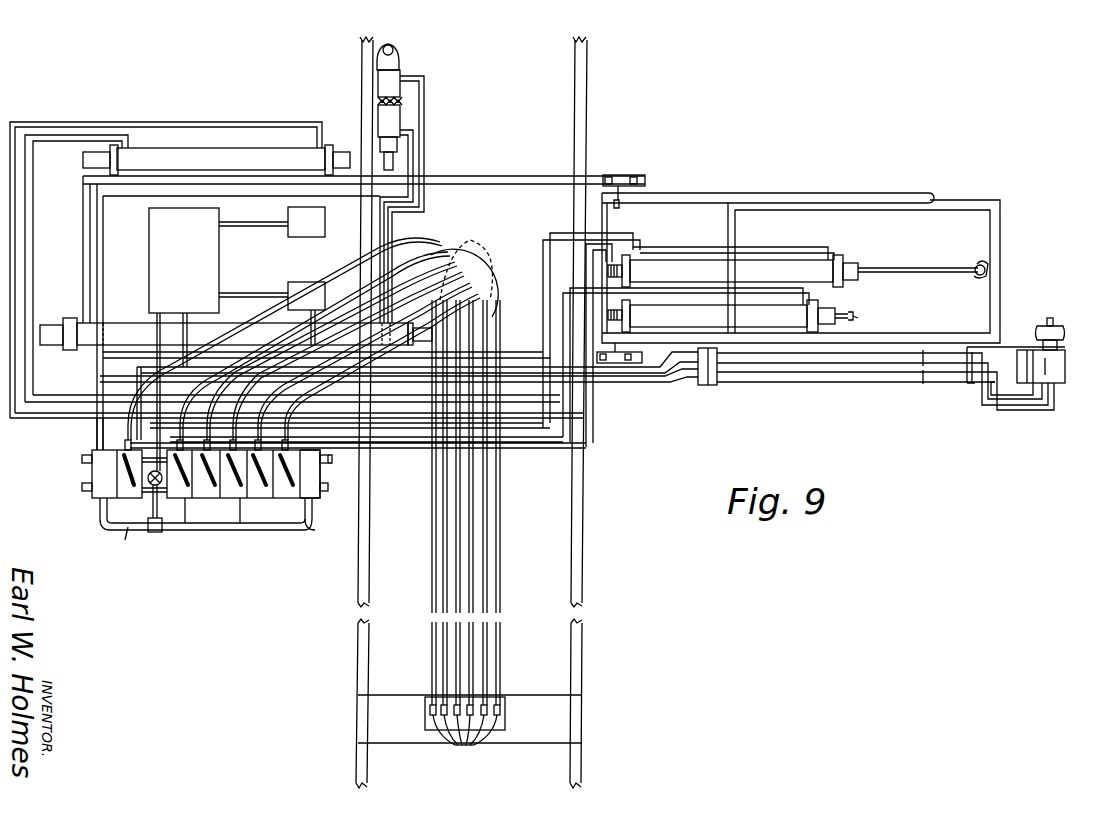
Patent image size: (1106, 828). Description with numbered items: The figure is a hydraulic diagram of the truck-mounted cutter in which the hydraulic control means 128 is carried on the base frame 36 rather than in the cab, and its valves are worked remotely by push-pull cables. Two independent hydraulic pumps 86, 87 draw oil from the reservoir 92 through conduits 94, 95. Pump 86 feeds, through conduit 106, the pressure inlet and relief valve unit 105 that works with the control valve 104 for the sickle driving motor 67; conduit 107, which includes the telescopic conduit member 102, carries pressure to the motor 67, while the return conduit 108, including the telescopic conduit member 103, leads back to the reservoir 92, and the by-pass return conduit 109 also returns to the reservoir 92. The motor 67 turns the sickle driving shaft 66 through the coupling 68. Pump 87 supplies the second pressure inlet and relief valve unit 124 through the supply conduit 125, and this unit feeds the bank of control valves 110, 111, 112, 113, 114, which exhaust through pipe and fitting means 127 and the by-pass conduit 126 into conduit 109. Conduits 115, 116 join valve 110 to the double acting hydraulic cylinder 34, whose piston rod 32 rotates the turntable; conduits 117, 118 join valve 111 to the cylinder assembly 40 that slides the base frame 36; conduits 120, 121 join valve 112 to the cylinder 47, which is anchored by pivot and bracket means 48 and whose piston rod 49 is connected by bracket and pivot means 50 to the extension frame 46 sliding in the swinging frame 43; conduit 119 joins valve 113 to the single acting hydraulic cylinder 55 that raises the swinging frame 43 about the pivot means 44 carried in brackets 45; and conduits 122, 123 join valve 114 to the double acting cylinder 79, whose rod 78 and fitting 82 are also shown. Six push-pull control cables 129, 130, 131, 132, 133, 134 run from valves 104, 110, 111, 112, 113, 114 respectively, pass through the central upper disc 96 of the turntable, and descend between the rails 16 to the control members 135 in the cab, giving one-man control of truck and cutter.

The mast rails 16 is at (580, 90).
The piston rod 32 is at (395, 160).
The hydraulic cylinder 34 is at (392, 107).
The base frame 36 is at (551, 181).
The hydraulic cylinder assembly 40 is at (207, 160).
The swinging frame 43 is at (895, 190).
The horizontal pivot means 44 is at (645, 184).
The brackets 45 is at (612, 175).
The extension frame 46 is at (965, 202).
The cylinder 47 is at (772, 258).
The pivot and bracket means 48 is at (622, 272).
The piston rod 49 is at (902, 270).
The bracket and pivot means 50 is at (977, 265).
The hydraulic cylinder 55 is at (124, 325).
The sickle driving shaft 66 is at (1054, 320).
The hydraulic motor 67 is at (1058, 385).
The coupling 68 is at (1063, 332).
The piston rod 78 is at (838, 312).
The hydraulic cylinder 79 is at (728, 316).
The piston rod 82 is at (622, 316).
The hydraulic pump 86 is at (306, 222).
The hydraulic pump 87 is at (306, 313).
The reservoir 92 is at (184, 339).
The conduit 94 is at (263, 235).
The conduit 95 is at (236, 283).
The upper disc 96 is at (487, 243).
The telescopic conduit member 102 is at (888, 370).
The telescopic conduit member 103 is at (920, 384).
The control valve 104 is at (128, 531).
The pressure inlet and relief valve unit 105 is at (92, 470).
The conduit 106 is at (100, 432).
The conduit 107 is at (660, 382).
The return conduit 108 is at (656, 384).
The by-pass return conduit 109 is at (141, 368).
The control valve 110 is at (194, 498).
The control valve 111 is at (190, 528).
The control valve 112 is at (232, 498).
The control valve 113 is at (248, 528).
The control valve 114 is at (282, 498).
The conduit 115 is at (413, 150).
The conduit 116 is at (424, 96).
The conduit 117 is at (30, 237).
The conduit 118 is at (130, 113).
The conduit 119 is at (395, 445).
The conduit 120 is at (816, 250).
The conduit 121 is at (636, 236).
The conduit 122 is at (572, 426).
The conduit 123 is at (592, 412).
The pressure inlet and relief valve unit 124 is at (312, 496).
The fluid pressure supply conduit 125 is at (330, 455).
The by-pass conduit 126 is at (308, 528).
The pipe and fitting means 127 is at (160, 486).
The hydraulic control means 128 is at (188, 502).
The push-pull control cable 129 is at (292, 272).
The push-pull control cable 130 is at (290, 345).
The push-pull control cable 131 is at (290, 325).
The push-pull control cable 132 is at (340, 327).
The push-pull control cable 133 is at (408, 283).
The push-pull control cable 134 is at (426, 255).
The control members 135 is at (464, 746).